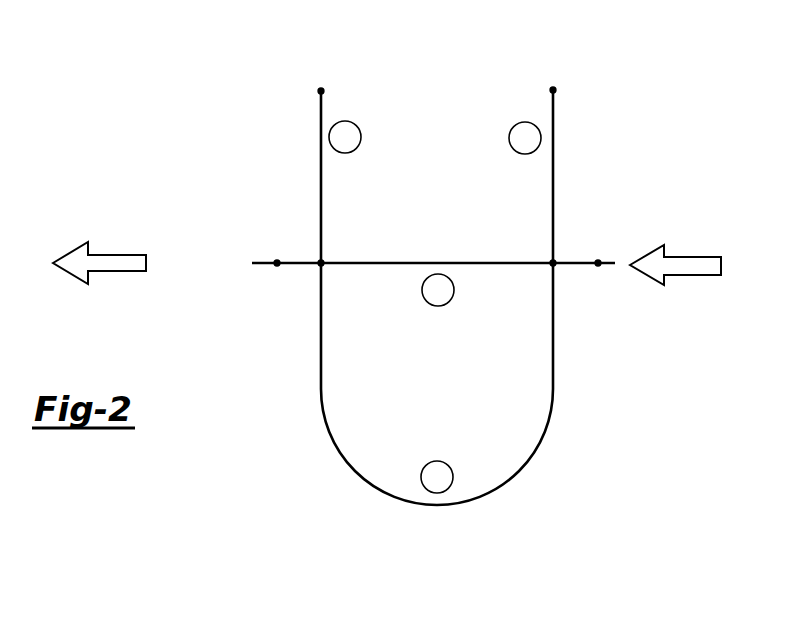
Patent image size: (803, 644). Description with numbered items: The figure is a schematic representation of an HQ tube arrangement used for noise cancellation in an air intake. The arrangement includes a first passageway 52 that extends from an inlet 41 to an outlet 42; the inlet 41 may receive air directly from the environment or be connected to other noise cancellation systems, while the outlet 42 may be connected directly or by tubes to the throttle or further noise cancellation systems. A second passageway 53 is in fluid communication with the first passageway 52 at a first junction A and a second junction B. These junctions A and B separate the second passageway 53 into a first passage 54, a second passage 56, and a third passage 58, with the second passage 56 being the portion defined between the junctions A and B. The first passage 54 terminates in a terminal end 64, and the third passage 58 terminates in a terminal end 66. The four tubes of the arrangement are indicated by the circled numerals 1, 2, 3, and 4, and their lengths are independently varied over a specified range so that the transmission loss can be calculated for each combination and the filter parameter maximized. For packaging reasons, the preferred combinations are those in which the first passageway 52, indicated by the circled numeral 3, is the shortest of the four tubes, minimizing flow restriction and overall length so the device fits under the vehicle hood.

The inlet 41 is at (598, 263).
The outlet 42 is at (277, 263).
The first passageway 52 is at (405, 268).
The second passageway 53 is at (550, 449).
The first passage 54 is at (553, 182).
The second passage 56 is at (437, 505).
The third passage 58 is at (321, 176).
The terminal end 64 is at (553, 90).
The terminal end 66 is at (321, 91).
The first junction A is at (553, 263).
The second junction B is at (321, 263).
The circled numeral 1 is at (437, 477).
The circled numeral 2 is at (525, 138).
The circled numeral 3 is at (438, 290).
The circled numeral 4 is at (345, 137).